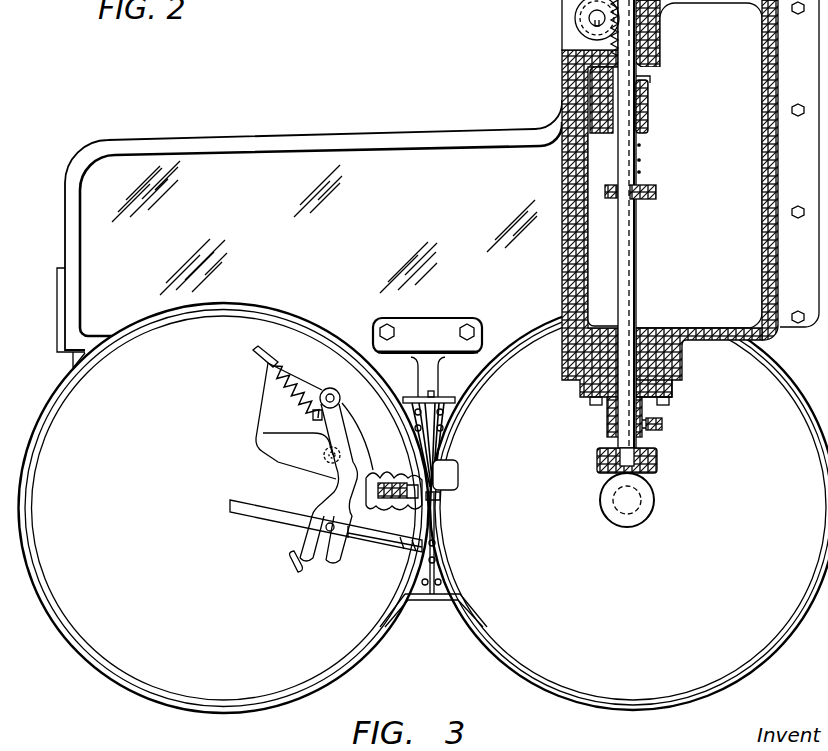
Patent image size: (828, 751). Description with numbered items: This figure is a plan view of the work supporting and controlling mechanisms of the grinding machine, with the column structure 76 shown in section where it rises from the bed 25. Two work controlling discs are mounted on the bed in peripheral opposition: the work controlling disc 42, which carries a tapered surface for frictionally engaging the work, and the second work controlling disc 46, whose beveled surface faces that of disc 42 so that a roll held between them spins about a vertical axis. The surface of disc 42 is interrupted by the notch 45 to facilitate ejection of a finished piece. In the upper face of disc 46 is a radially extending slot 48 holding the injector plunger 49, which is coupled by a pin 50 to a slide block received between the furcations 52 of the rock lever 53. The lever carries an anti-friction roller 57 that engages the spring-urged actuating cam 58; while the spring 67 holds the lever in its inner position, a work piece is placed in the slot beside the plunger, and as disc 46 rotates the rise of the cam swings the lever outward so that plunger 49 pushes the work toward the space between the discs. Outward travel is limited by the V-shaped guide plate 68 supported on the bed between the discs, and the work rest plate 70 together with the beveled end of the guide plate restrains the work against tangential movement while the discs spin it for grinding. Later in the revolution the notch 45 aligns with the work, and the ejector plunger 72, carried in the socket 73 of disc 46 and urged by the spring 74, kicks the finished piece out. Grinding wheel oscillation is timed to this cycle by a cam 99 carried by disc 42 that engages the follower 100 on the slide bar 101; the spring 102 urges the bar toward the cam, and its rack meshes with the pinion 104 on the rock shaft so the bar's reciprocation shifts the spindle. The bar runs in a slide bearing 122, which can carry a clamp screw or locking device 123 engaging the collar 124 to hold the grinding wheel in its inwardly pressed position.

The bed 25 is at (352, 170).
The work controlling disc 42 is at (750, 648).
The notch 45 is at (458, 472).
The second work controlling disc 46 is at (98, 628).
The radially extending groove or slot 48 is at (282, 522).
The plunger 49 is at (396, 548).
The pin 50 is at (326, 530).
The furcations 52 is at (330, 563).
The rock lever 53 is at (345, 488).
The anti-friction roller 57 is at (331, 456).
The actuating cam 58 is at (264, 438).
The spring 67 is at (298, 404).
The V-shaped guide plate 68 is at (430, 586).
The work rest plate 70 is at (438, 478).
The ejector plunger 72 is at (438, 497).
The socket 73 is at (390, 482).
The spring 74 is at (382, 474).
The column structure 76 is at (768, 73).
The cam 99 is at (651, 501).
The follower 100 is at (648, 469).
The slide bar 101 is at (632, 239).
The spring 102 is at (639, 152).
The pinion 104 is at (576, 18).
The slide bearing 122 is at (673, 386).
The clamp screw or locking device 123 is at (664, 426).
The collar 124 is at (604, 424).